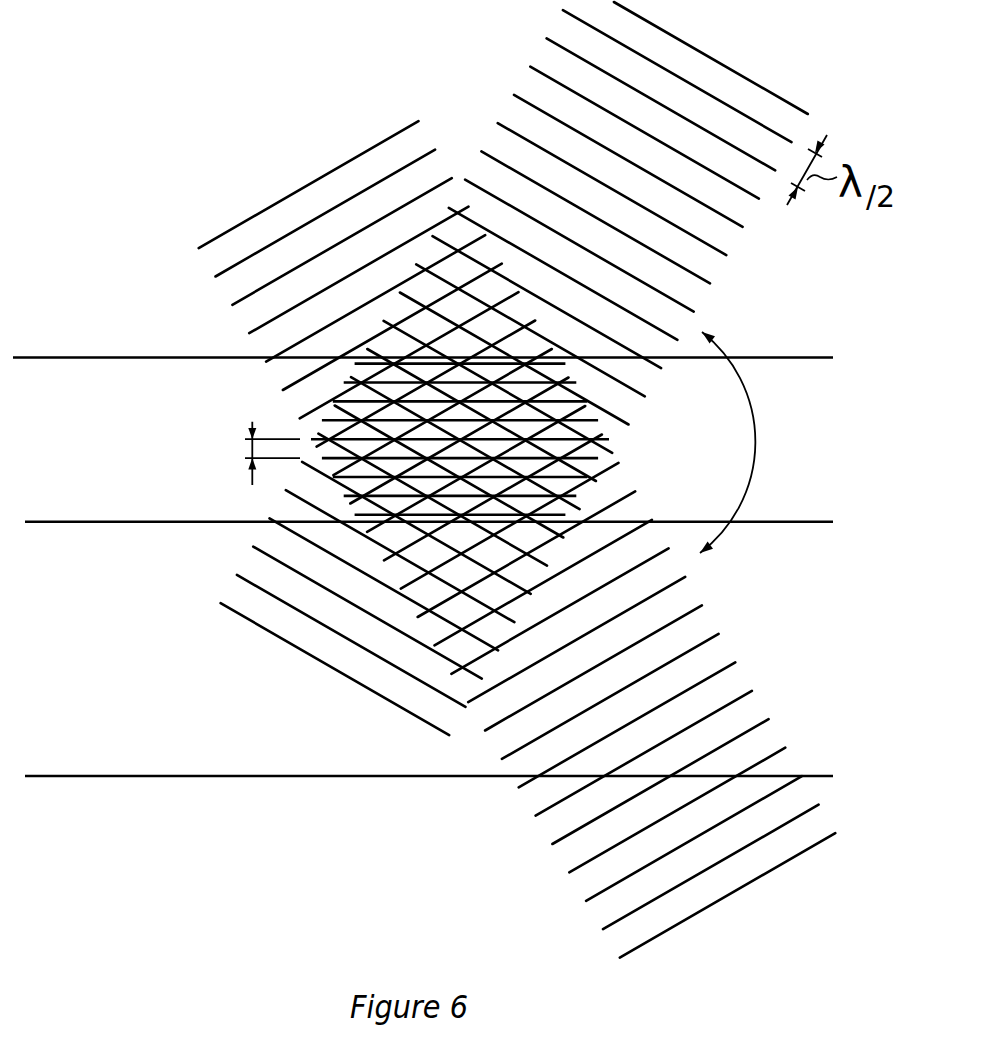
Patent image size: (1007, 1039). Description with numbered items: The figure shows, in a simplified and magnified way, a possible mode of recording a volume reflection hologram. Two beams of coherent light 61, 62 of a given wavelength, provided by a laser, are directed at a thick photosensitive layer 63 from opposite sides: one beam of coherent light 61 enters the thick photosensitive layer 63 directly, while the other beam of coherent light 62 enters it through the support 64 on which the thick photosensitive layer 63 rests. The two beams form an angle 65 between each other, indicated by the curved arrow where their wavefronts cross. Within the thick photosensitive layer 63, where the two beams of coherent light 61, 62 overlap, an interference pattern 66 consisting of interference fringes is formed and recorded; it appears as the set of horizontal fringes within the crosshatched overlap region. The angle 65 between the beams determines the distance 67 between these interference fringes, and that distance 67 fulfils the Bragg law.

The beam of coherent light 61 is at (660, 38).
The beam of coherent light 62 is at (716, 889).
The thick photosensitive layer 63 is at (807, 497).
The support 64 is at (808, 620).
The angle 65 is at (760, 430).
The interference pattern 66 is at (614, 424).
The distance between the interference fringes 67 is at (250, 447).